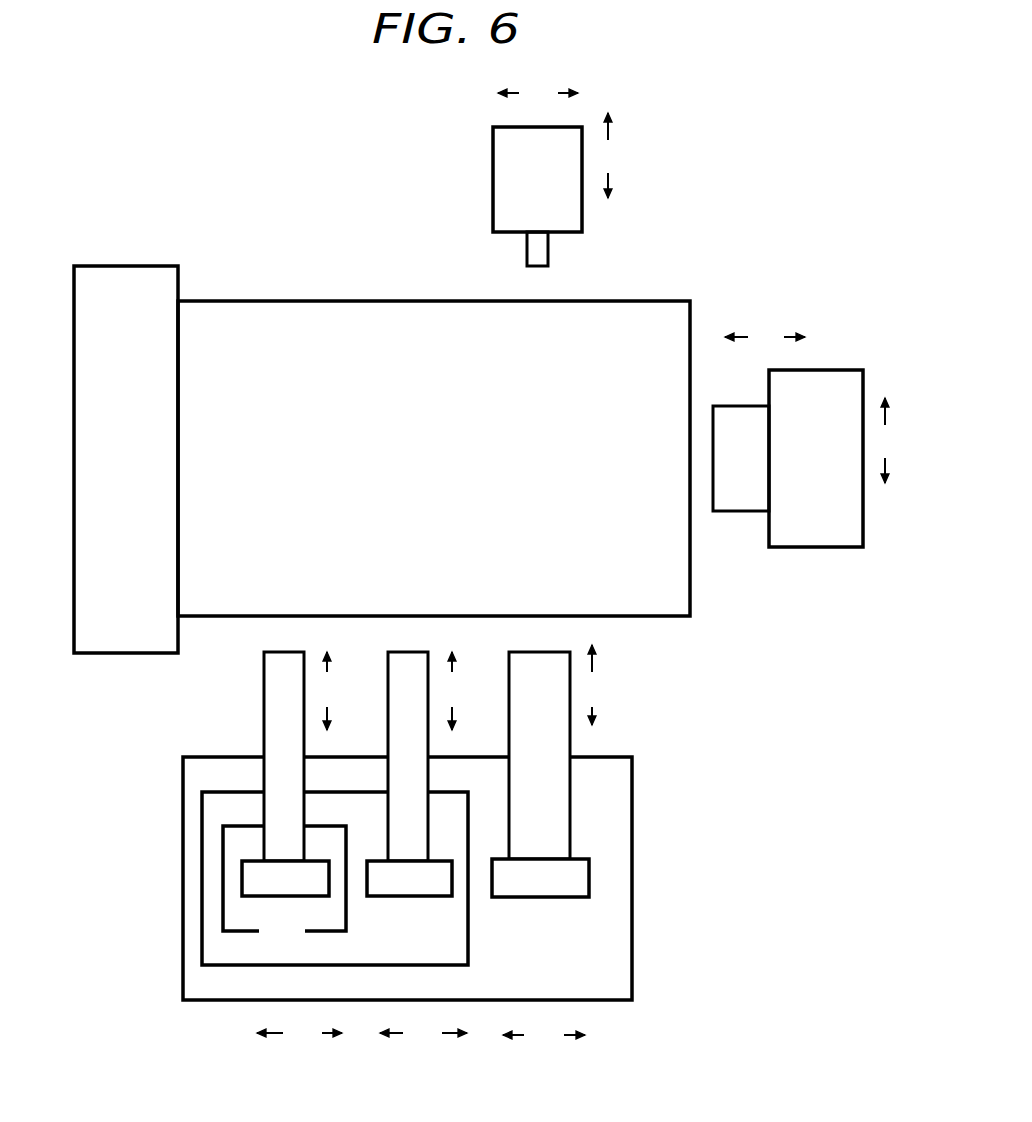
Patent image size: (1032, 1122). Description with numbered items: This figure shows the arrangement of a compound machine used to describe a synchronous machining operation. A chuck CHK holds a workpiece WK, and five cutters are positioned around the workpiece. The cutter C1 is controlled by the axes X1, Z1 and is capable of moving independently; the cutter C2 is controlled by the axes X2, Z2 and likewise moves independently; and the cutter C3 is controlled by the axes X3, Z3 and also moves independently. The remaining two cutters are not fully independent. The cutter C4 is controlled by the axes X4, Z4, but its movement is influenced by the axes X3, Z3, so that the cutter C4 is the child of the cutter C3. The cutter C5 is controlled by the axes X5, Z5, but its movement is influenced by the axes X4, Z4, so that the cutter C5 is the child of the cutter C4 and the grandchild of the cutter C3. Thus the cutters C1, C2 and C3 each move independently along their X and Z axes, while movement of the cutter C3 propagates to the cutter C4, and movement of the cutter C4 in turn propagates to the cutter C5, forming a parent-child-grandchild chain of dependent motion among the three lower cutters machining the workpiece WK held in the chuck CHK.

The chuck CHK is at (147, 265).
The workpiece WK is at (333, 300).
The cutter C1 is at (788, 458).
The cutter C2 is at (537, 196).
The cutter C3 is at (549, 898).
The cutter C4 is at (416, 897).
The cutter C5 is at (286, 897).
The Z axis Z1 is at (765, 336).
The Z axis Z2 is at (538, 93).
The Z axis Z3 is at (544, 1037).
The Z axis Z4 is at (423, 1035).
The Z axis Z5 is at (299, 1035).
The X axis X1 is at (887, 440).
The X axis X2 is at (610, 155).
The X axis X3 is at (594, 685).
The X axis X4 is at (454, 691).
The X axis X5 is at (329, 691).